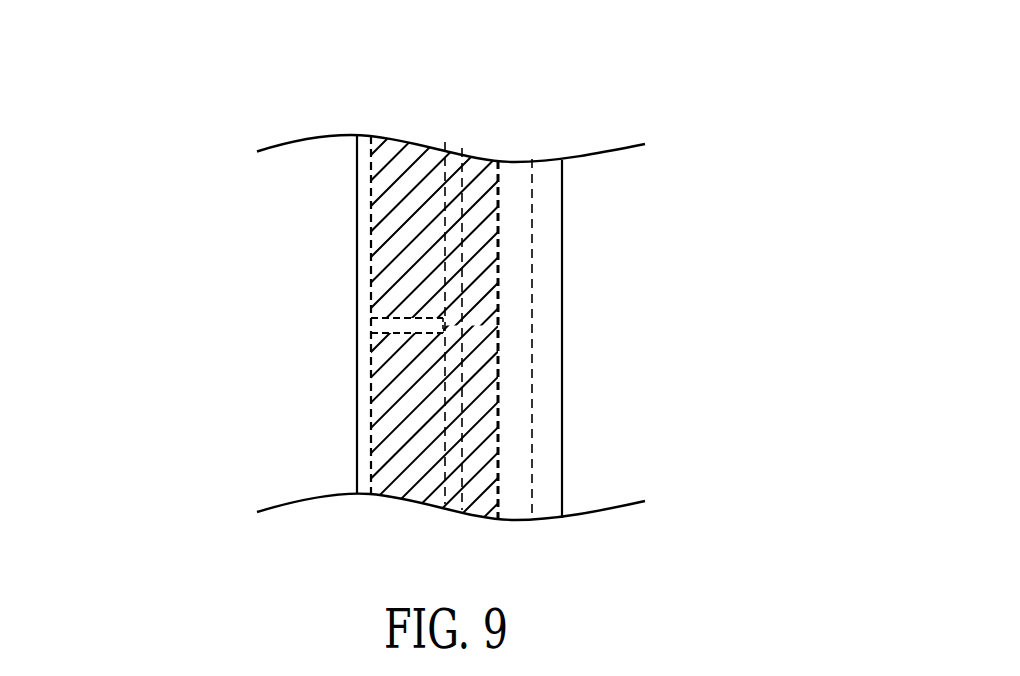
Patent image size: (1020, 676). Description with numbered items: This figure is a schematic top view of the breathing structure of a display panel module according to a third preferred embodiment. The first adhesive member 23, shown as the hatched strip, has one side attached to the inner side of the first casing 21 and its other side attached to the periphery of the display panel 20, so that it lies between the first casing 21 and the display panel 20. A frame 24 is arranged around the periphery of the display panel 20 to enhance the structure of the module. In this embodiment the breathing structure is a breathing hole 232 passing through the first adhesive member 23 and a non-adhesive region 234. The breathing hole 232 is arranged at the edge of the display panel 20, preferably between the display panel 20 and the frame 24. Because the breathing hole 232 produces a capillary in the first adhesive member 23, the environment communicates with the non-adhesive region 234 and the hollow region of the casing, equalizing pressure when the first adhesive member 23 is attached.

The display panel 20 is at (312, 315).
The first casing 21 is at (550, 312).
The first adhesive member 23 is at (428, 203).
The frame 24 is at (515, 200).
The breathing hole 232 is at (452, 328).
The non-adhesive region 234 is at (410, 327).